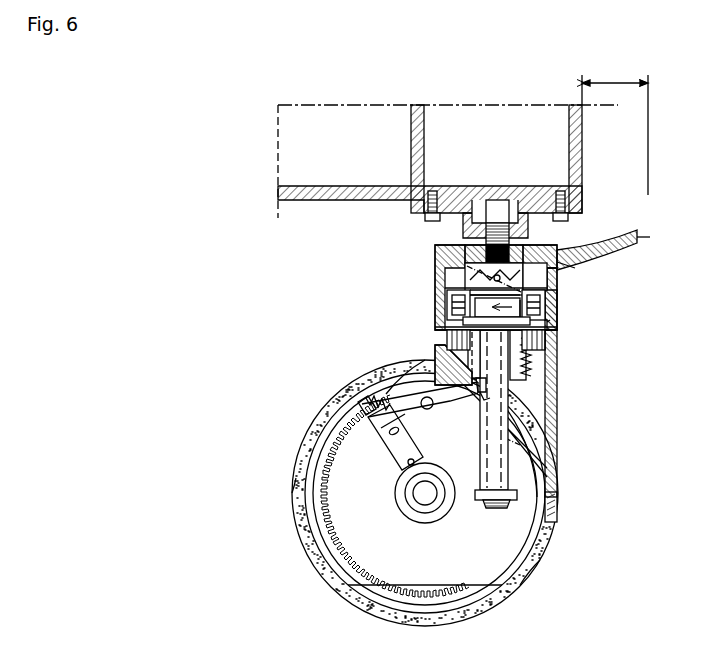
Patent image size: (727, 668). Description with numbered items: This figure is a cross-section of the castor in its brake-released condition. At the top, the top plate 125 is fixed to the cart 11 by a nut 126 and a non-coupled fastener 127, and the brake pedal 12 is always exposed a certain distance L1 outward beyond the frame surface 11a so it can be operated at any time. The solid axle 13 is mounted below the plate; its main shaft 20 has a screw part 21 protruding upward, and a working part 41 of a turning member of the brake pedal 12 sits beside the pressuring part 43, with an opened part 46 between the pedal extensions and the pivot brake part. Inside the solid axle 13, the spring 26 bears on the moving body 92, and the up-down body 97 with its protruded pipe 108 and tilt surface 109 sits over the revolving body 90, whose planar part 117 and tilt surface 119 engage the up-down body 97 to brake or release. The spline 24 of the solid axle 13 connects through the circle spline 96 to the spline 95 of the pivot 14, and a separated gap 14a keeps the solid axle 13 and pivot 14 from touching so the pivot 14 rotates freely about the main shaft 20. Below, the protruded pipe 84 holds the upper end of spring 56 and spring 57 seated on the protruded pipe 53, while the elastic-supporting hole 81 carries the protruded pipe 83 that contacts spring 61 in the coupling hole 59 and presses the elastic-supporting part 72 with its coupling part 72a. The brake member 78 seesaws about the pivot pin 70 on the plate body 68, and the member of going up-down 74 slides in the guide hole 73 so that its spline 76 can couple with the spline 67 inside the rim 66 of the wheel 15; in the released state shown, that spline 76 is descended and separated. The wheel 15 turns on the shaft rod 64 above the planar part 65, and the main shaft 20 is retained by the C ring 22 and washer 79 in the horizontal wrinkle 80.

The cart 11 is at (424, 125).
The frame surface 11a is at (582, 140).
The top plate 125 is at (582, 205).
The nut 126 is at (478, 200).
The screw part 21 is at (495, 222).
The non-coupled 127 is at (425, 219).
The working part 41 is at (529, 247).
The certain distance L1 is at (615, 130).
The pressuring part 43 is at (629, 241).
The opened part 46 is at (560, 264).
The brake pedal 12 is at (636, 244).
The solid axle 13 is at (437, 253).
The up-down body 97 is at (478, 258).
The tilt surface 109 is at (464, 270).
The planar part 117 is at (470, 296).
The protruded pipe 108 is at (535, 276).
The tilt surface 119 is at (558, 282).
The spring 26 is at (447, 300).
The spline 24 is at (547, 298).
The revolving body 90 is at (455, 310).
The circle spline 96 is at (552, 312).
The moving body 92 is at (548, 321).
The separated gap 14a is at (463, 335).
The protruded pipe 84 is at (447, 341).
The elastic-supporting hole 81 is at (550, 336).
The spline 95 is at (556, 341).
The spring 56 is at (450, 370).
The protruded pipe 83 is at (477, 350).
The coupling hole 59 is at (484, 387).
The spring 61 is at (486, 400).
The spring 57 is at (528, 360).
The protruded pipe 53 is at (530, 374).
The pivot 14 is at (547, 414).
The main shaft 20 is at (555, 446).
The elastic-supporting part 72 is at (443, 406).
The coupling part 72a is at (483, 400).
The member of going up-down 74 is at (375, 428).
The guide hole 73 is at (397, 449).
The brake member 78 is at (384, 408).
The spline 76 is at (364, 406).
The pivot pin 70 is at (404, 383).
The rim 66 is at (333, 443).
The spline 67 is at (300, 466).
The plate body 68 is at (525, 523).
The wheel 15 is at (533, 575).
The planar part 65 is at (478, 595).
The shaft rod 64 is at (420, 497).
The washer 79 is at (480, 500).
The C ring 22 is at (497, 509).
The horizontal wrinkle 80 is at (517, 496).